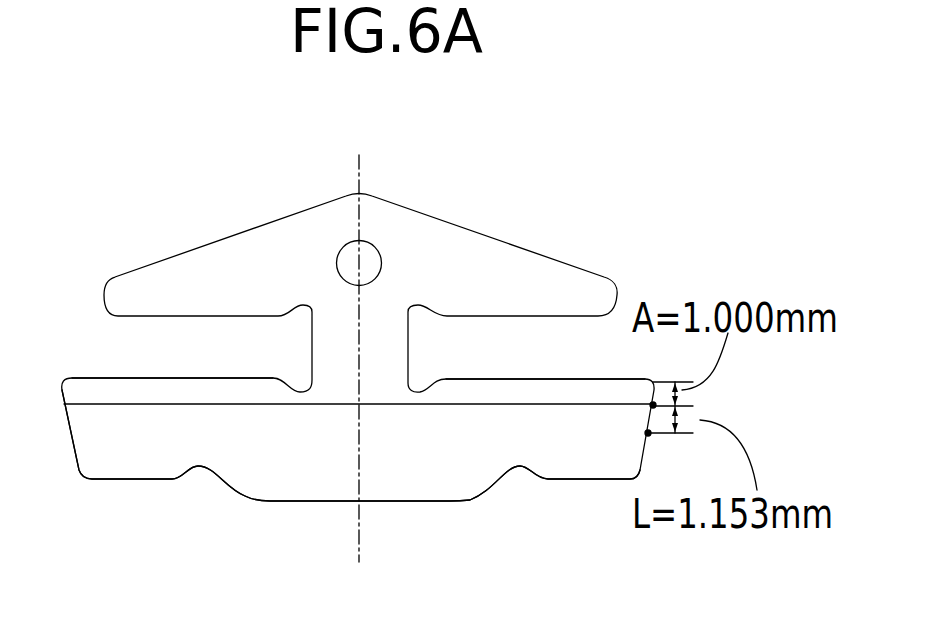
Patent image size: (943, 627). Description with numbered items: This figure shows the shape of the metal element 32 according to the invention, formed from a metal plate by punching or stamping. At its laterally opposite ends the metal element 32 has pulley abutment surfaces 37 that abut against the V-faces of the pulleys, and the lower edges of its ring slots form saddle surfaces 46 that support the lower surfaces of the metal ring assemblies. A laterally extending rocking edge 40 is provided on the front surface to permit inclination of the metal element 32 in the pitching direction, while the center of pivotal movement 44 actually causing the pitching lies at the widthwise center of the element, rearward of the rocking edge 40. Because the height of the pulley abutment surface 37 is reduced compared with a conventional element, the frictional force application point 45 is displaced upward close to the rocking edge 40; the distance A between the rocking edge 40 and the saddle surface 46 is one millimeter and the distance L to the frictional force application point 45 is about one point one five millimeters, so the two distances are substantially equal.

The metal element 32 is at (242, 220).
The saddle surface 46 is at (163, 377).
The rocking edge 40 is at (337, 407).
The center of pivotal movement 44 is at (652, 405).
The frictional force application point 45 is at (648, 433).
The pulley abutment surface 37 is at (72, 443).